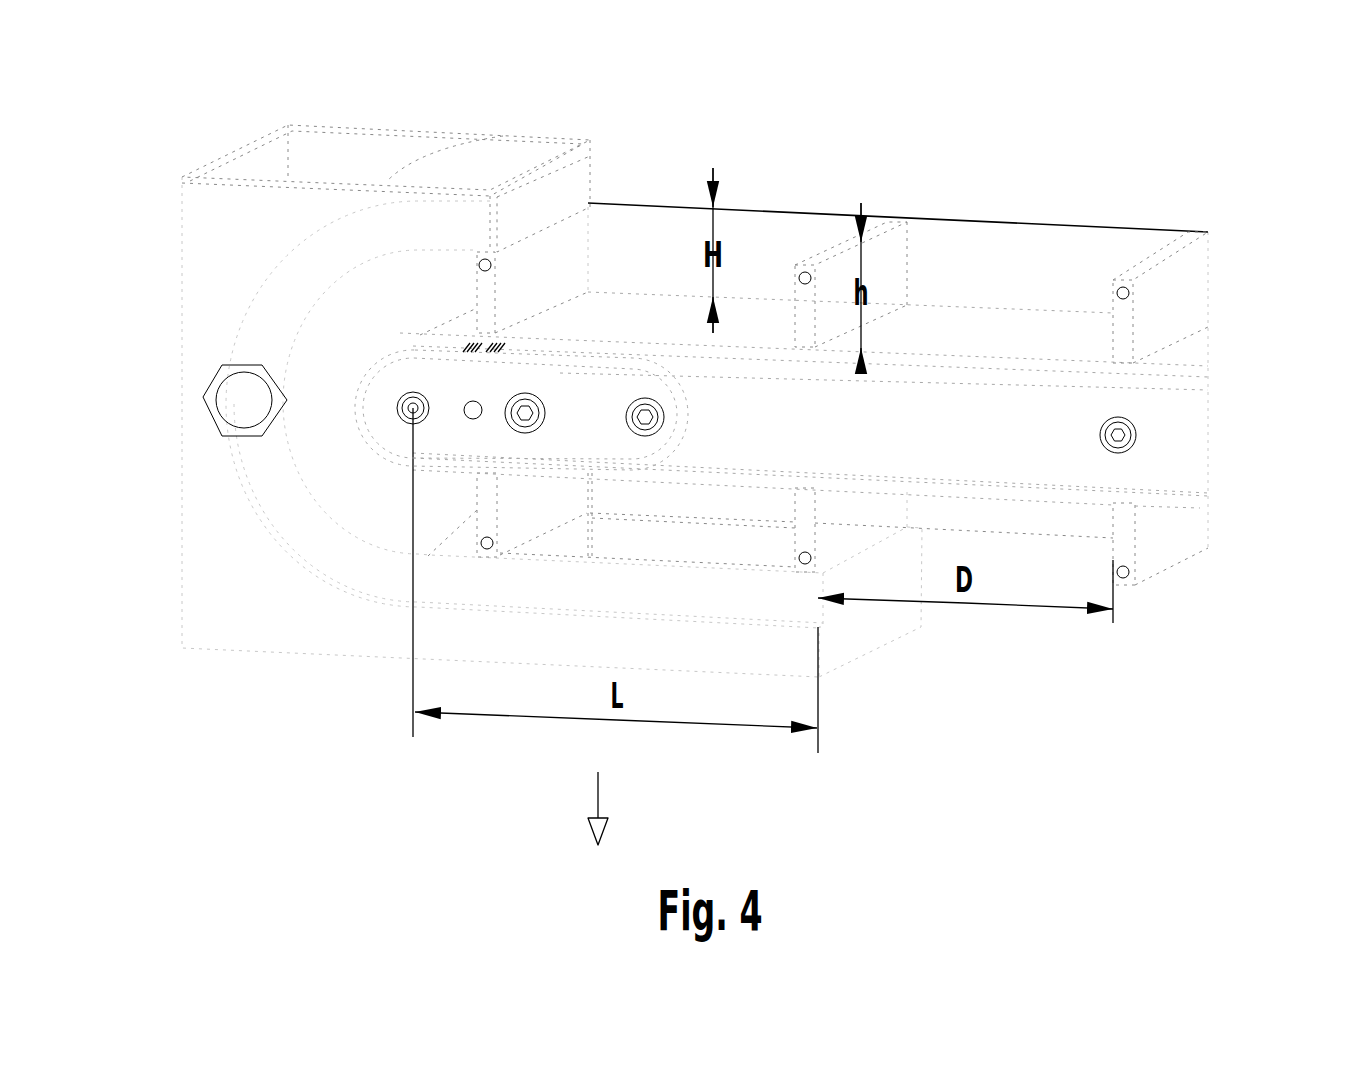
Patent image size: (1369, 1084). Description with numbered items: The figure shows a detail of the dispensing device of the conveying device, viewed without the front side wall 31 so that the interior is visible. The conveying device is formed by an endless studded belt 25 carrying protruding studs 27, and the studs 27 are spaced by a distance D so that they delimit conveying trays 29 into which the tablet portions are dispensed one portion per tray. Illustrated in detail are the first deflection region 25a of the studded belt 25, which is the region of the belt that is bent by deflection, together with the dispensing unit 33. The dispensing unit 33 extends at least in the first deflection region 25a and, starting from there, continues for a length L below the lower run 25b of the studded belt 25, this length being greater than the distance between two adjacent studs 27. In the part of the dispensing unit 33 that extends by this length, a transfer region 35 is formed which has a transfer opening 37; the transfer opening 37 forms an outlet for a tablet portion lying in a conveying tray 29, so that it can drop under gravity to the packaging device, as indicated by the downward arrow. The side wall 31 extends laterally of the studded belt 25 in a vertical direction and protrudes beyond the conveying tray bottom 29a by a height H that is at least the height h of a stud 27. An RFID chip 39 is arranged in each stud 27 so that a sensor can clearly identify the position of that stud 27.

The studded belt 25 is at (1050, 177).
The first deflection region 25a is at (163, 640).
The lower run 25b is at (1200, 497).
The protruding stud 27 is at (888, 255).
The conveying tray 29 is at (345, 345).
The conveying tray bottom 29a is at (753, 320).
The side wall 31 is at (800, 240).
The dispensing unit 33 is at (200, 203).
The transfer region 35 is at (400, 714).
The transfer opening 37 is at (575, 553).
The RFID chip 39 is at (1127, 295).